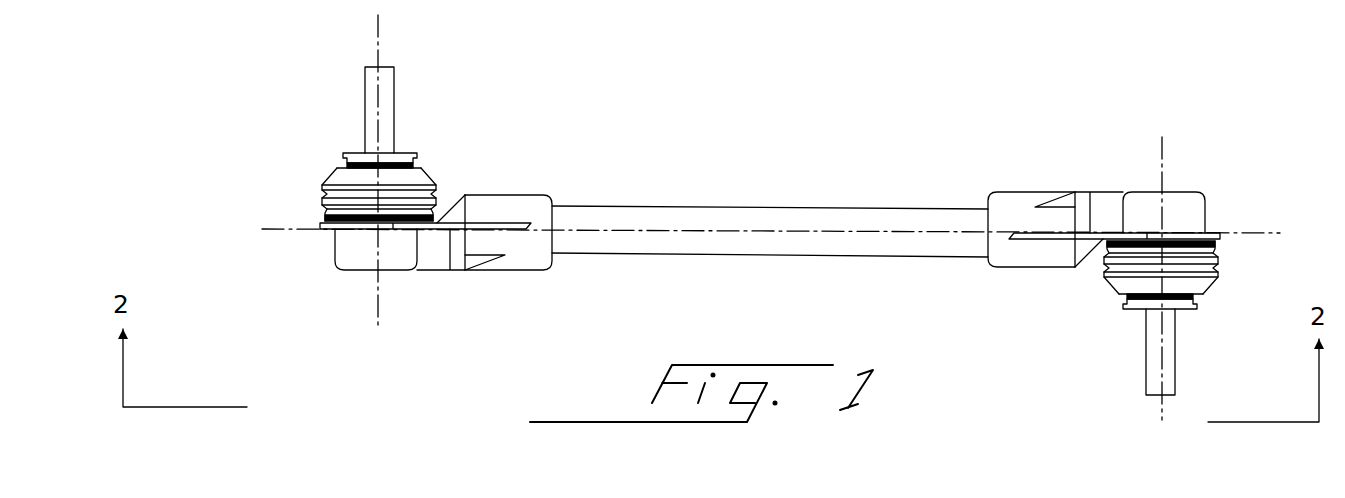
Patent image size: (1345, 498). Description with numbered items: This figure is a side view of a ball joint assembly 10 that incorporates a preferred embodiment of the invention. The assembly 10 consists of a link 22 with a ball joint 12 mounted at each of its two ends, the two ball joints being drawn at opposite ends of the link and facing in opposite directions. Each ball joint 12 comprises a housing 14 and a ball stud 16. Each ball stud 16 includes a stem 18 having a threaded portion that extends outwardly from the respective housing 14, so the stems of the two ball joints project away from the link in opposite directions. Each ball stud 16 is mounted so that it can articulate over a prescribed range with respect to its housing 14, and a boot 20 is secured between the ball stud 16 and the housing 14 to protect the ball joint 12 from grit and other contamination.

The ball joint assembly 10 is at (814, 179).
The ball joint 12 is at (318, 274).
The housing 14 is at (398, 263).
The ball stud 16 is at (418, 116).
The stem 18 is at (368, 95).
The boot 20 is at (333, 180).
The link 22 is at (923, 208).